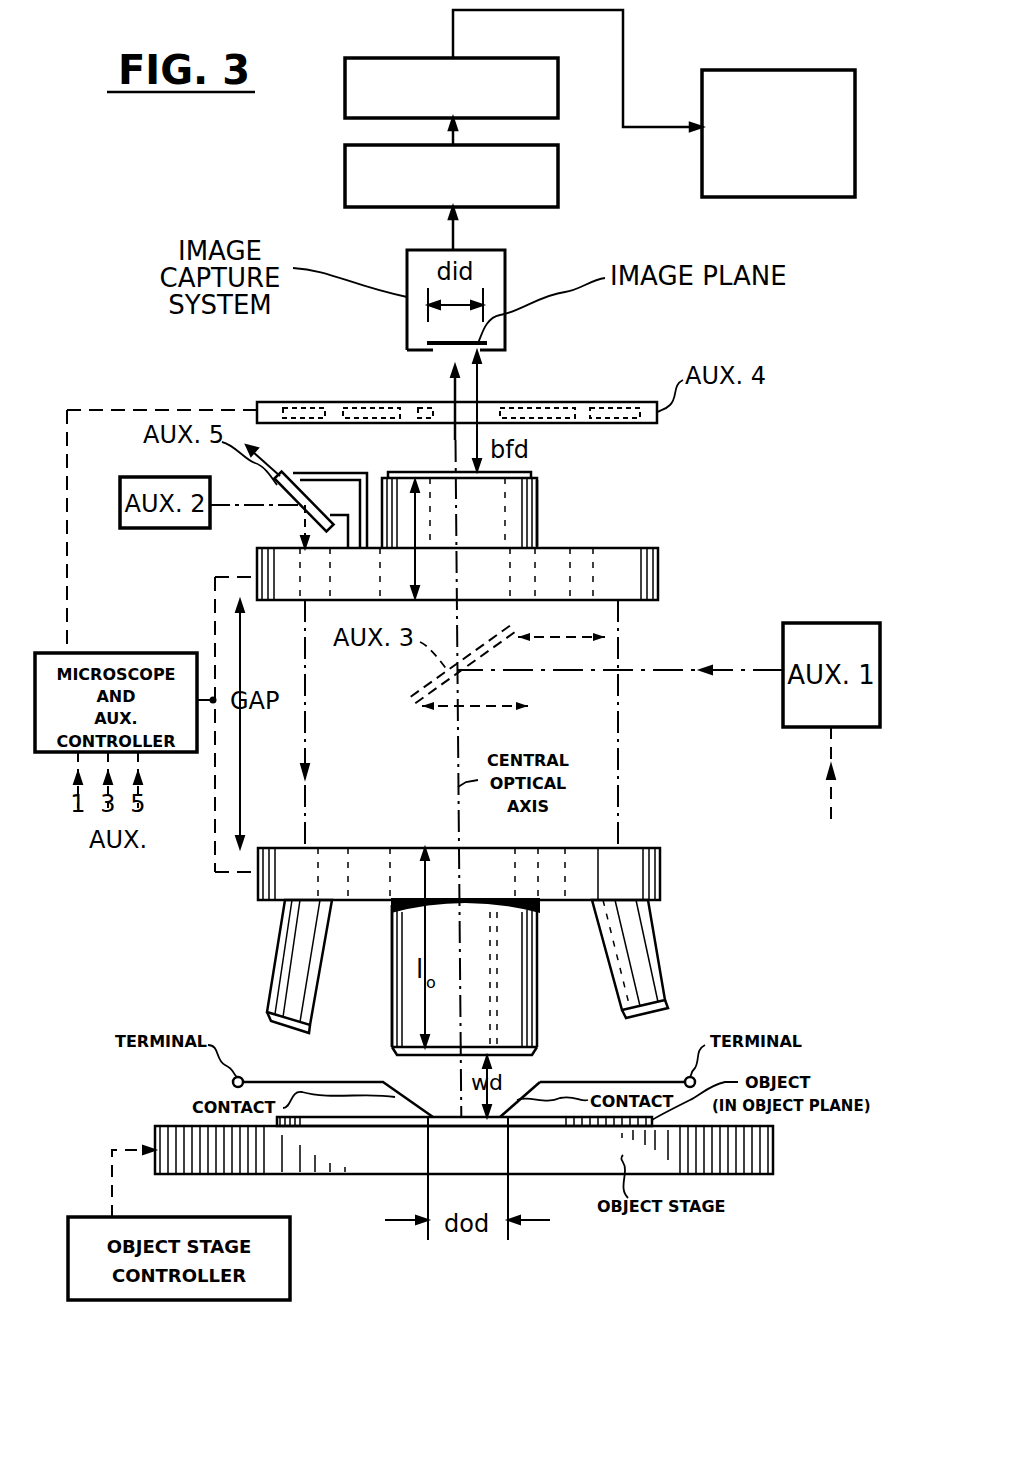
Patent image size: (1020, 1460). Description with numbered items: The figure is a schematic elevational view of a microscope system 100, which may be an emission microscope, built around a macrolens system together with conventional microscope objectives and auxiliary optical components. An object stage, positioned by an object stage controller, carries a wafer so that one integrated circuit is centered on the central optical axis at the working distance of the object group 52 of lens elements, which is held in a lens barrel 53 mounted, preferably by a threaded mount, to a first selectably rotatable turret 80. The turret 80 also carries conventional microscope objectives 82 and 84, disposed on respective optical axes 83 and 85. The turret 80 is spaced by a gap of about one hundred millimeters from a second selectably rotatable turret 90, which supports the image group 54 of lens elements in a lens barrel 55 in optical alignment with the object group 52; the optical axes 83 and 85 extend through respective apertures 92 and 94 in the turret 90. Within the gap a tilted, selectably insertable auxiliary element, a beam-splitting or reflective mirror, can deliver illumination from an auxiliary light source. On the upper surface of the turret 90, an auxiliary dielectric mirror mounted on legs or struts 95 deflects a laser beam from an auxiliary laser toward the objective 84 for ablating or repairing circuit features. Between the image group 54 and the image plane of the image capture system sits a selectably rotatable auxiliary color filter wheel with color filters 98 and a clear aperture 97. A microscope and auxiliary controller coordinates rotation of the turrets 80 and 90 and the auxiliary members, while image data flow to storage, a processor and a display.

The microscope system 100 is at (187, 195).
The color filters 98 is at (302, 402).
The clear aperture 97 is at (432, 405).
The legs or struts 95 is at (335, 505).
The aperture 94 is at (282, 572).
The image group 54 is at (500, 497).
The lens barrel 55 is at (537, 508).
The second selectably rotatable turret 90 is at (645, 570).
The aperture 92 is at (630, 602).
The optical axis 85 is at (306, 732).
The optical axis 83 is at (618, 755).
The first selectably rotatable turret 80 is at (662, 862).
The microscope objective 84 is at (280, 948).
The microscope objective 82 is at (650, 962).
The lens barrel 53 is at (392, 1000).
The object group 52 is at (500, 1013).